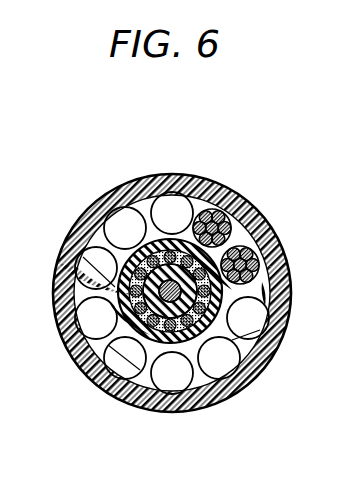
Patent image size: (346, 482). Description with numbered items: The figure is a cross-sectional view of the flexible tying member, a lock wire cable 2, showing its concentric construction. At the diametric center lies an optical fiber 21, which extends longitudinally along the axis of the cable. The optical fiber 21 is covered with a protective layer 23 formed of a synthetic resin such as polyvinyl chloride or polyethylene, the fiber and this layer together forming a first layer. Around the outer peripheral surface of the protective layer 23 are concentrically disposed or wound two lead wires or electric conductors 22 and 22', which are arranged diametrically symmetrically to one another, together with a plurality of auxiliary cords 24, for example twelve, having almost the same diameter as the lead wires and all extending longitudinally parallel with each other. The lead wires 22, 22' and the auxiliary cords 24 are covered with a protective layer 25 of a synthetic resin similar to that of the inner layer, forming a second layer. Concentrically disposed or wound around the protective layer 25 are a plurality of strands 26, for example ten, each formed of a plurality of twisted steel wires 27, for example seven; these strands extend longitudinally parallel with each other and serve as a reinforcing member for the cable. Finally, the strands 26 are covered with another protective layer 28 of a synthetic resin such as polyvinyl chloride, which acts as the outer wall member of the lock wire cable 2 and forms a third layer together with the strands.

The lock wire cable 2 is at (247, 154).
The optical fiber 21 is at (77, 250).
The lead wire 22 is at (172, 182).
The lead wire 22' is at (172, 408).
The protective layer 23 is at (140, 335).
The auxiliary cord 24 is at (83, 368).
The protective layer 25 is at (208, 327).
The strand 26 is at (291, 289).
The twisted steel wire 27 is at (270, 180).
The protective layer 28 is at (242, 373).